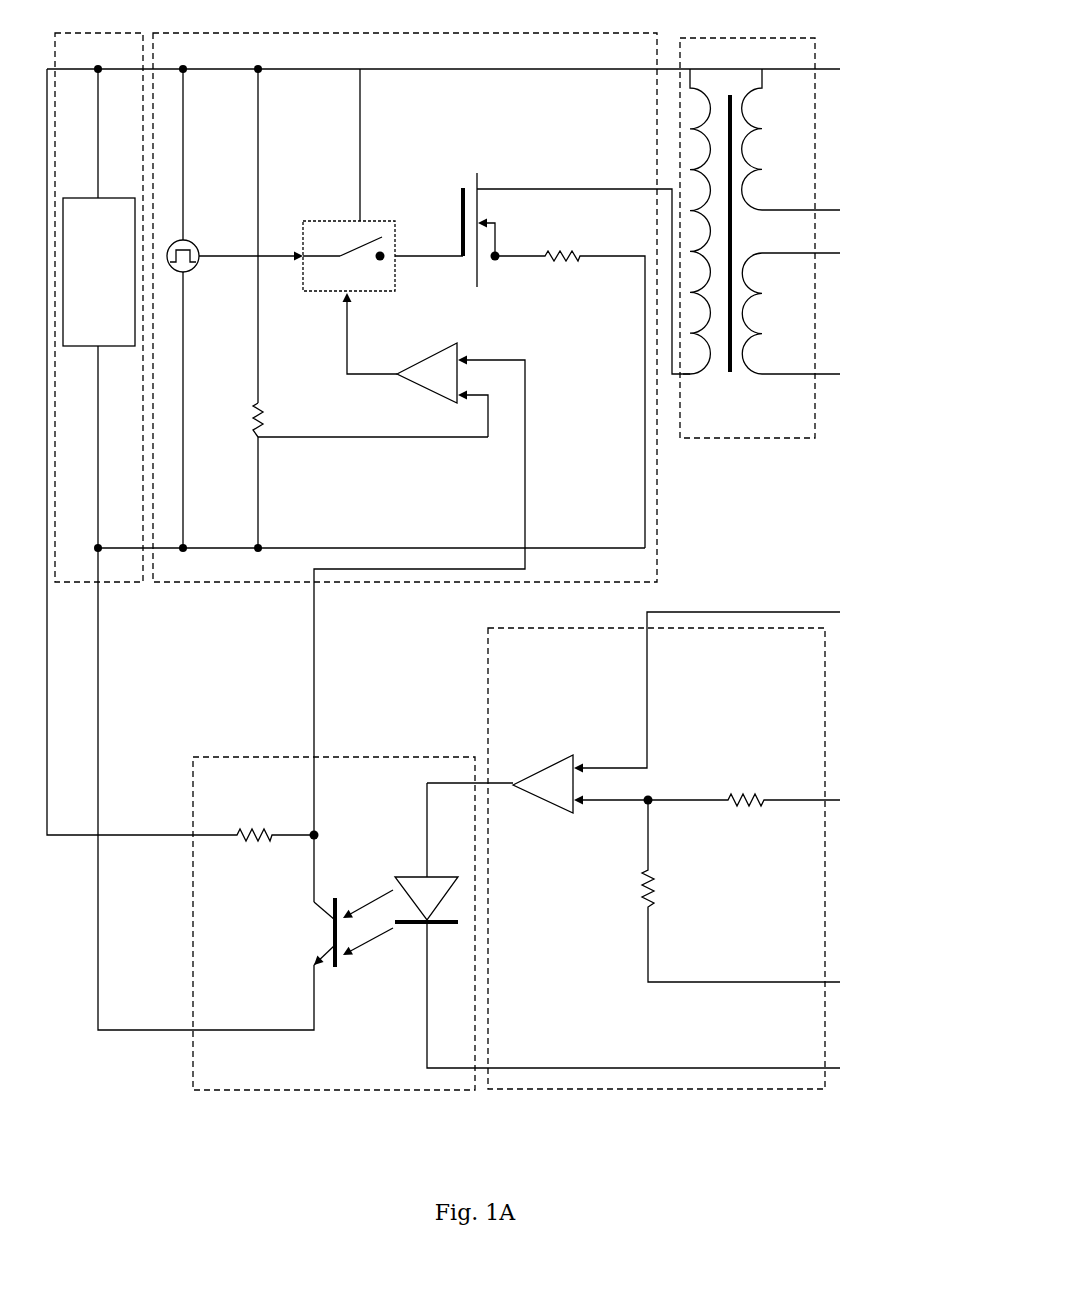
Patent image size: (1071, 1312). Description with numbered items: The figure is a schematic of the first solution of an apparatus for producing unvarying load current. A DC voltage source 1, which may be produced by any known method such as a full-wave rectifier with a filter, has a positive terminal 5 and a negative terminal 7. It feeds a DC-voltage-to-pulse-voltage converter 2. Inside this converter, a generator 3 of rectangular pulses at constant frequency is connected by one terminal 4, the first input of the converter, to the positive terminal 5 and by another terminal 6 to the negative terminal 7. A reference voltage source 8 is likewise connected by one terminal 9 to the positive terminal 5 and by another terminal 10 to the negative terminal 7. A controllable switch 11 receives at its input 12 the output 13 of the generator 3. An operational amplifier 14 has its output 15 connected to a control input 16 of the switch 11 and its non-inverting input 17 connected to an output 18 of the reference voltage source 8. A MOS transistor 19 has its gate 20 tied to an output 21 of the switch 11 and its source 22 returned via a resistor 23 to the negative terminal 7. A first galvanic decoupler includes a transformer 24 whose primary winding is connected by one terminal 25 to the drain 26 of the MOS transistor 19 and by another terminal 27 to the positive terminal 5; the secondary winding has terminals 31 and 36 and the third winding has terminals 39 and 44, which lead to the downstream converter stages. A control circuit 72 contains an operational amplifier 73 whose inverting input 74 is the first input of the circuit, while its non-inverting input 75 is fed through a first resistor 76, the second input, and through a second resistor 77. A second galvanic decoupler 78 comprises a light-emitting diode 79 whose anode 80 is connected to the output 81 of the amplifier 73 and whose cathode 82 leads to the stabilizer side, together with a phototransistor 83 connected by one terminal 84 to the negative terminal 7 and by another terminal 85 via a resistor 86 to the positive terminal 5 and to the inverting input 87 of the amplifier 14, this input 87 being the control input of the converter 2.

The DC voltage source 1 is at (102, 33).
The DC-voltage-to-pulse-voltage converter 2 is at (627, 33).
The generator of rectangular pulses at constant frequency 3 is at (183, 240).
The terminal of the generator 4 is at (183, 200).
The positive terminal of the DC voltage source 5 is at (98, 190).
The terminal of the generator 6 is at (183, 313).
The negative terminal of the DC voltage source 7 is at (98, 362).
The reference voltage source 8 is at (261, 403).
The terminal of the reference voltage source 9 is at (258, 365).
The terminal of the reference voltage source 10 is at (258, 475).
The controllable switch 11 is at (360, 69).
The input of the controllable switch 12 is at (297, 262).
The output of the generator 13 is at (208, 256).
The operational amplifier 14 is at (413, 211).
The output of the operational amplifier 15 is at (383, 378).
The control input of the controllable switch 16 is at (350, 300).
The non-inverting input of the operational amplifier 17 is at (473, 403).
The output of the reference voltage source 18 is at (297, 437).
The MOS transistor 19 is at (463, 188).
The gate of the MOS transistor 20 is at (448, 250).
The output of the controllable switch 21 is at (405, 260).
The source of the MOS transistor 22 is at (495, 256).
The resistor 23 is at (571, 250).
The transformer 24 is at (735, 38).
The terminal of the primary winding 25 is at (693, 375).
The drain of the MOS transistor 26 is at (483, 188).
The terminal of the primary winding 27 is at (693, 88).
The terminal of the secondary winding 31 is at (762, 72).
The terminal of the secondary winding 36 is at (762, 210).
The terminal of the third winding 39 is at (758, 253).
The terminal of the third winding 44 is at (762, 374).
The control circuit 72 is at (812, 1089).
The operational amplifier 73 is at (550, 802).
The inverting input of the operational amplifier 74 is at (588, 763).
The non-inverting input of the operational amplifier 75 is at (592, 807).
The first resistor 76 is at (745, 803).
The second resistor 77 is at (648, 903).
The second galvanic decoupler 78 is at (275, 1090).
The light-emitting diode 79 is at (410, 925).
The anode of the light-emitting diode 80 is at (428, 859).
The output of the operational amplifier 81 is at (502, 782).
The cathode of the light-emitting diode 82 is at (428, 928).
The phototransistor 83 is at (336, 968).
The terminal of the phototransistor 84 is at (314, 973).
The terminal of the phototransistor 85 is at (314, 885).
The resistor 86 is at (257, 828).
The inverting input of the operational amplifier 87 is at (472, 358).